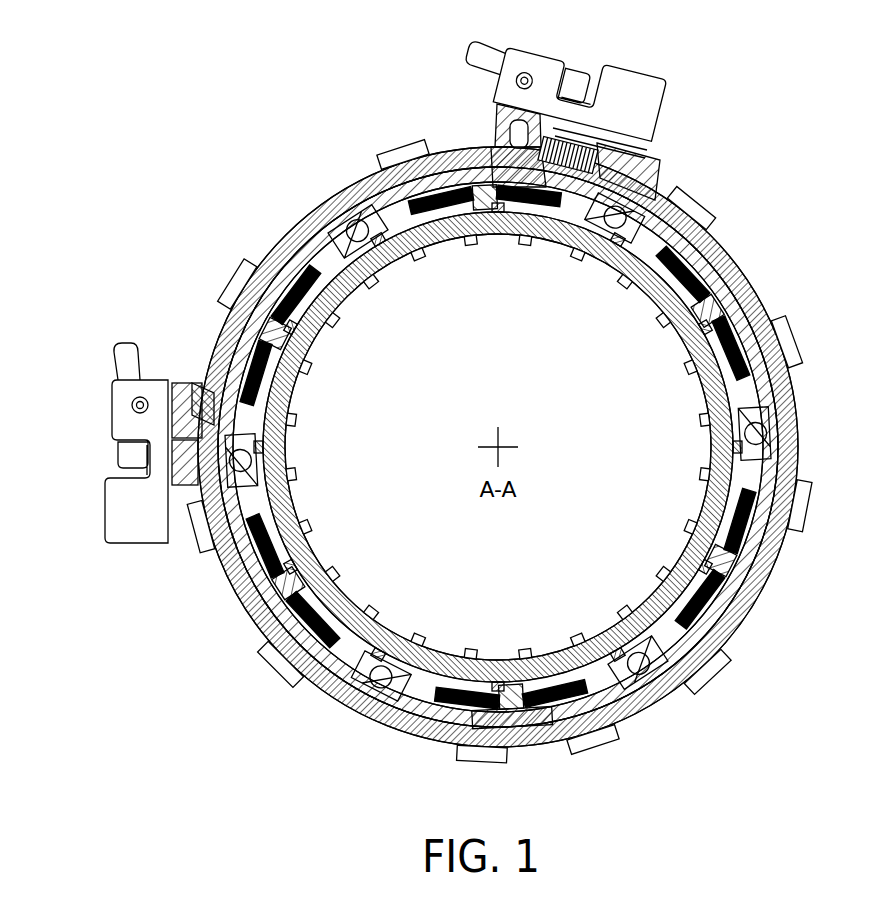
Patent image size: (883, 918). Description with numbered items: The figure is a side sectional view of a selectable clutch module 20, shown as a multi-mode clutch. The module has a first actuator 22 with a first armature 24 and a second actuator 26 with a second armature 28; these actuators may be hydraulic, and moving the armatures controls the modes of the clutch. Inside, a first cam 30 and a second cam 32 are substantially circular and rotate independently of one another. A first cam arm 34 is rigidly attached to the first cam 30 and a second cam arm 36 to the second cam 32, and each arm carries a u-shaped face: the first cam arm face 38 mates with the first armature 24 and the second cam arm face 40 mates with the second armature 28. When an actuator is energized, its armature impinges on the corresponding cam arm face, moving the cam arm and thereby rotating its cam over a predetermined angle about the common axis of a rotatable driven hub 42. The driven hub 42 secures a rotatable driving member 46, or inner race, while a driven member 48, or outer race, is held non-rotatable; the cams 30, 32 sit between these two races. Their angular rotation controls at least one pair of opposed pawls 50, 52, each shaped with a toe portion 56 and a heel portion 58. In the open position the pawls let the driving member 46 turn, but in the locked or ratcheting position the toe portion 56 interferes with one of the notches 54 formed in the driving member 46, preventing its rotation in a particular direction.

The selectable clutch module 20 is at (430, 429).
The first actuator 22 is at (635, 85).
The first armature 24 is at (517, 128).
The second actuator 26 is at (130, 512).
The second armature 28 is at (177, 412).
The first cam 30 is at (498, 418).
The second cam 32 is at (197, 387).
The first cam arm 34 is at (492, 150).
The second cam arm 36 is at (184, 520).
The first cam arm face 38 is at (502, 152).
The second cam arm face 40 is at (182, 387).
The driven hub 42 is at (542, 447).
The driving member 46 is at (566, 447).
The driven member 48 is at (202, 238).
The pawl 50 is at (500, 752).
The pawl 52 is at (498, 484).
The notch 54 is at (498, 488).
The toe portion 56 is at (498, 447).
The heel portion 58 is at (340, 706).